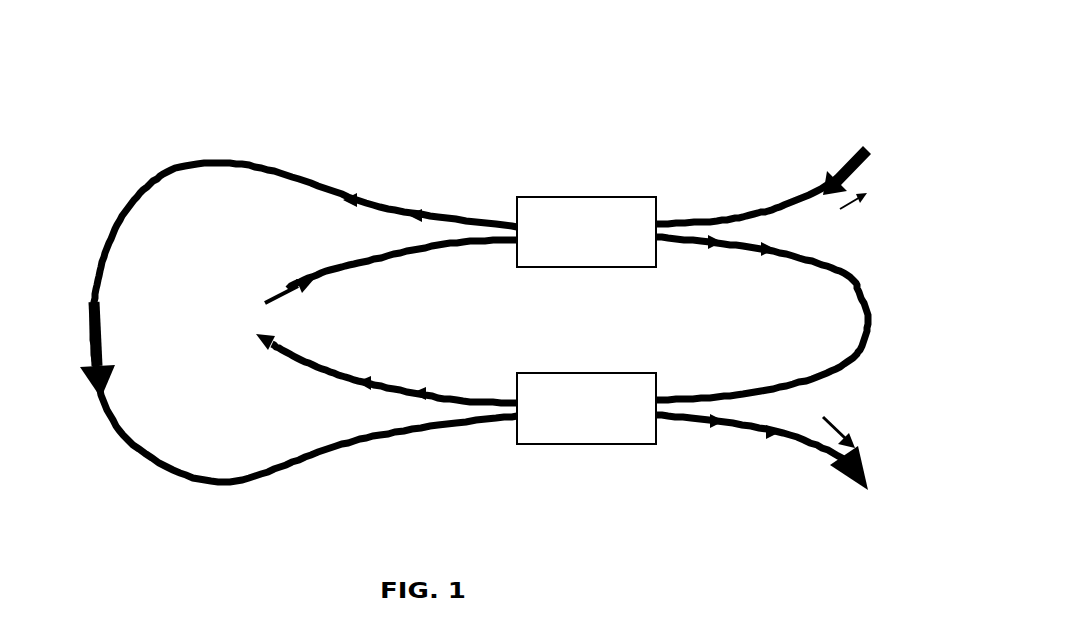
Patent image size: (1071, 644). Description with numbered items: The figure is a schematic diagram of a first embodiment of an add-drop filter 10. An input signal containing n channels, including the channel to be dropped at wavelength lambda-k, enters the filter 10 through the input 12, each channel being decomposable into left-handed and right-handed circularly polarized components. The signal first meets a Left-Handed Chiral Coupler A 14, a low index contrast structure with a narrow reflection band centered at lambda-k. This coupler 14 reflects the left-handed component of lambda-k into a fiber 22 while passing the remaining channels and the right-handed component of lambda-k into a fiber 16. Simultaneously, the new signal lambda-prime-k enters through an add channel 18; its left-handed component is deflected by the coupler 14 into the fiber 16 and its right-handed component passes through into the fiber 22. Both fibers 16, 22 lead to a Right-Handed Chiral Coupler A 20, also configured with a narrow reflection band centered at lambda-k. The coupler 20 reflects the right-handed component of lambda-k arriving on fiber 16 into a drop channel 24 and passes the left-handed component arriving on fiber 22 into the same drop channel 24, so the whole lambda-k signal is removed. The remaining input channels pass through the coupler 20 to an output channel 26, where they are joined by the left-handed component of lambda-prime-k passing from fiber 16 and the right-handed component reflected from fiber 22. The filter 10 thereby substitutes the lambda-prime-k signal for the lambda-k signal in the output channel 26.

The add-drop filter 10 is at (513, 88).
The input 12 is at (735, 213).
The Left-Handed Chiral Coupler A 14 is at (587, 196).
The fiber 16 is at (243, 160).
The add channel 18 is at (357, 267).
The Right-Handed Chiral Coupler A 20 is at (577, 372).
The fiber 22 is at (853, 356).
The drop channel 24 is at (467, 395).
The output channel 26 is at (807, 444).